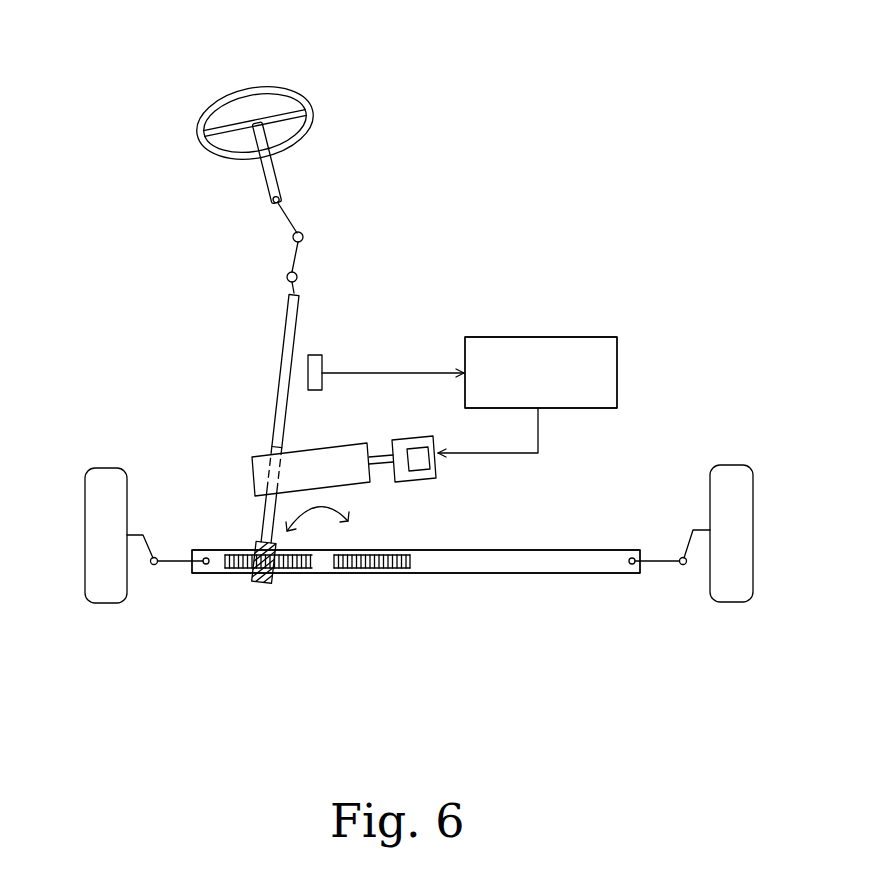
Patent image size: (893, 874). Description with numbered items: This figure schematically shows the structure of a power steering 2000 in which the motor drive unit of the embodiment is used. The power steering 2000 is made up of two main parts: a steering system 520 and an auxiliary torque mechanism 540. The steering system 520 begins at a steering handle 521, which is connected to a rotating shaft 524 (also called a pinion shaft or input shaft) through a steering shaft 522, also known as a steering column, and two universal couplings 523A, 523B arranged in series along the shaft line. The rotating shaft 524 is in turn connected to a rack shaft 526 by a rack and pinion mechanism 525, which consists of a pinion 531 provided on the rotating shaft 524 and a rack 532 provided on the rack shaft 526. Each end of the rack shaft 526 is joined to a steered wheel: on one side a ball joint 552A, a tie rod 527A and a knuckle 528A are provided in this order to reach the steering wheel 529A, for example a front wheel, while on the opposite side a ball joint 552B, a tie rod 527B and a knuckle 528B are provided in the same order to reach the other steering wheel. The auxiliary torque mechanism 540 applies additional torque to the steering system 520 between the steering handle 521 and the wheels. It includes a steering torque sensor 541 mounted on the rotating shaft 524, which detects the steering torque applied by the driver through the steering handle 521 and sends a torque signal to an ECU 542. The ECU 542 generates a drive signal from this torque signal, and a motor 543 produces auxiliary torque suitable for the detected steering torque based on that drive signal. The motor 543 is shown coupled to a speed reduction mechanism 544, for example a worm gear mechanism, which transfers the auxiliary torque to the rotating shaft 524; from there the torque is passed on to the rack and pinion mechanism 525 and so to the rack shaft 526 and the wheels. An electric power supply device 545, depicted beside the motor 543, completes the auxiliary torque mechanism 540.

The power steering 2000 is at (457, 110).
The steering system 520 is at (258, 303).
The steering handle 521 is at (212, 116).
The steering shaft 522 is at (278, 168).
The universal coupling 523A is at (304, 234).
The universal coupling 523B is at (298, 274).
The rotating shaft 524 is at (305, 322).
The rack and pinion mechanism 525 is at (335, 588).
The rack shaft 526 is at (455, 565).
The tie rod 527A is at (168, 559).
The tie rod 527B is at (665, 560).
The knuckle 528A is at (143, 535).
The knuckle 528B is at (692, 529).
The steering wheel 529A is at (105, 597).
The pinion 531 is at (313, 582).
The rack 532 is at (263, 568).
The auxiliary torque mechanism 540 is at (495, 308).
The steering torque sensor 541 is at (324, 357).
The ECU 542 is at (585, 343).
The motor 543 is at (414, 439).
The speed reduction mechanism 544 is at (262, 461).
The electric power supply device 545 is at (419, 460).
The ball joint 552A is at (200, 577).
The ball joint 552B is at (630, 572).